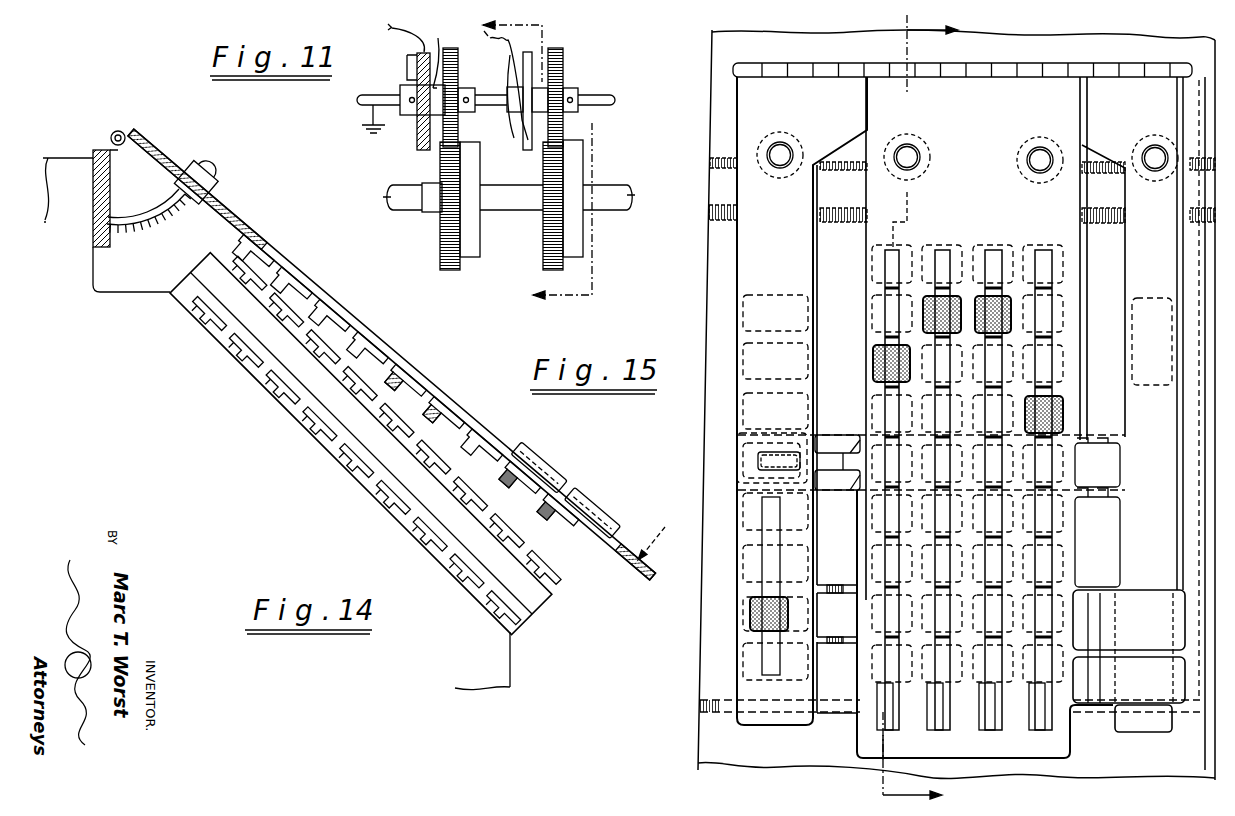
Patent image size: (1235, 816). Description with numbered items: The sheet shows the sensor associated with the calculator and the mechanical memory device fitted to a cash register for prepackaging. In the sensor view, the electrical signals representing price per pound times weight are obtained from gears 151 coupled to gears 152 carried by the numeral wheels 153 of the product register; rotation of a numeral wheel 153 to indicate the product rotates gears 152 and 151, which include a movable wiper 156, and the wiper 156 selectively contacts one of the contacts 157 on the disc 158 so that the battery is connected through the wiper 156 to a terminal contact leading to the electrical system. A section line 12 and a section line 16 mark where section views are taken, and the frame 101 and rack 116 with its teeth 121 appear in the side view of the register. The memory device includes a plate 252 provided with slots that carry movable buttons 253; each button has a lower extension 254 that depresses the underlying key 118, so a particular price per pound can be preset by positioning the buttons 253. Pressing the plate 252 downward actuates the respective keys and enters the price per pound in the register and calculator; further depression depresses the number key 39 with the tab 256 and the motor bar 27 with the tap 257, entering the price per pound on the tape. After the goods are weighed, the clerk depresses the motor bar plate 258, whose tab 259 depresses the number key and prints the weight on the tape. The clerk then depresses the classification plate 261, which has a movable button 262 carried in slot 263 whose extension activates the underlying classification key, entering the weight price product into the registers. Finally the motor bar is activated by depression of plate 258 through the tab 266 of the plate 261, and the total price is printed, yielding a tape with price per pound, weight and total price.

In FIG. 11, the section line 12- 12 is at (523, 164).
In FIG. 15, the section line 16- 16 is at (935, 412).
In FIG. 15, the motor bar 27 is at (1160, 298).
In FIG. 15, the number key 39 is at (737, 461).
In FIG. 14, the frame 101 is at (517, 627).
In FIG. 15, the frame 101 is at (697, 752).
In FIG. 14, the rack bar 116 is at (550, 602).
In FIG. 14, the key 118 is at (247, 265).
In FIG. 15, the key 118 is at (1030, 550).
In FIG. 14, the tooth 121 is at (340, 437).
In FIG. 11, the gears 151 is at (457, 66).
In FIG. 11, the gears 152 is at (450, 168).
In FIG. 11, the numeral wheels 153 is at (470, 241).
In FIG. 11, the movable wiper 156 is at (540, 87).
In FIG. 11, the contacts 157 is at (432, 140).
In FIG. 11, the disc 158 is at (530, 150).
In FIG. 14, the plate 252 is at (210, 178).
In FIG. 15, the plate 252 is at (893, 750).
In FIG. 14, the movable buttons 253 is at (345, 302).
In FIG. 15, the movable buttons 253 is at (935, 315).
In FIG. 14, the lower extension 254 is at (372, 343).
In FIG. 15, the tab 256 is at (843, 457).
In FIG. 15, the tap 257 is at (1112, 682).
In FIG. 15, the motor bar plate 258 is at (1143, 722).
In FIG. 15, the tab 259 is at (827, 477).
In FIG. 15, the classification plate 261 is at (740, 702).
In FIG. 15, the movable button 262 is at (768, 618).
In FIG. 15, the slot 263 is at (765, 572).
In FIG. 15, the tab 266 is at (848, 593).